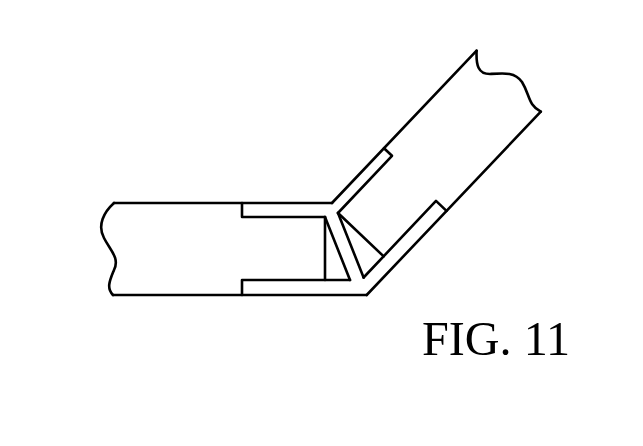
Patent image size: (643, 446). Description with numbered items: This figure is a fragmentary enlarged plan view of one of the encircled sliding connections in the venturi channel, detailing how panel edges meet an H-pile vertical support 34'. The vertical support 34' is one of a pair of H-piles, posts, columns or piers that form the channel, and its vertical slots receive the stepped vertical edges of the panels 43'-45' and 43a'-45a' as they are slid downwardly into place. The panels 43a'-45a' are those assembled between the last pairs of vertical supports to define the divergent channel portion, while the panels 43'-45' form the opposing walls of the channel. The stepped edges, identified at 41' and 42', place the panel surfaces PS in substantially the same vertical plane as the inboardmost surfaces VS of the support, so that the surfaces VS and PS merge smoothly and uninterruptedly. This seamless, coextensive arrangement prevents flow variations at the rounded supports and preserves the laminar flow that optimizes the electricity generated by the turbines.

The panels 43'-45' is at (207, 171).
The panels 43a'-45a' is at (399, 122).
The first panel slot / channel cavity 41' is at (263, 256).
The second panel slot / channel cavity 42' is at (402, 202).
The vertical support 34' is at (317, 210).
The panel surface PS is at (315, 198).
The inboardmost surface VS is at (328, 250).